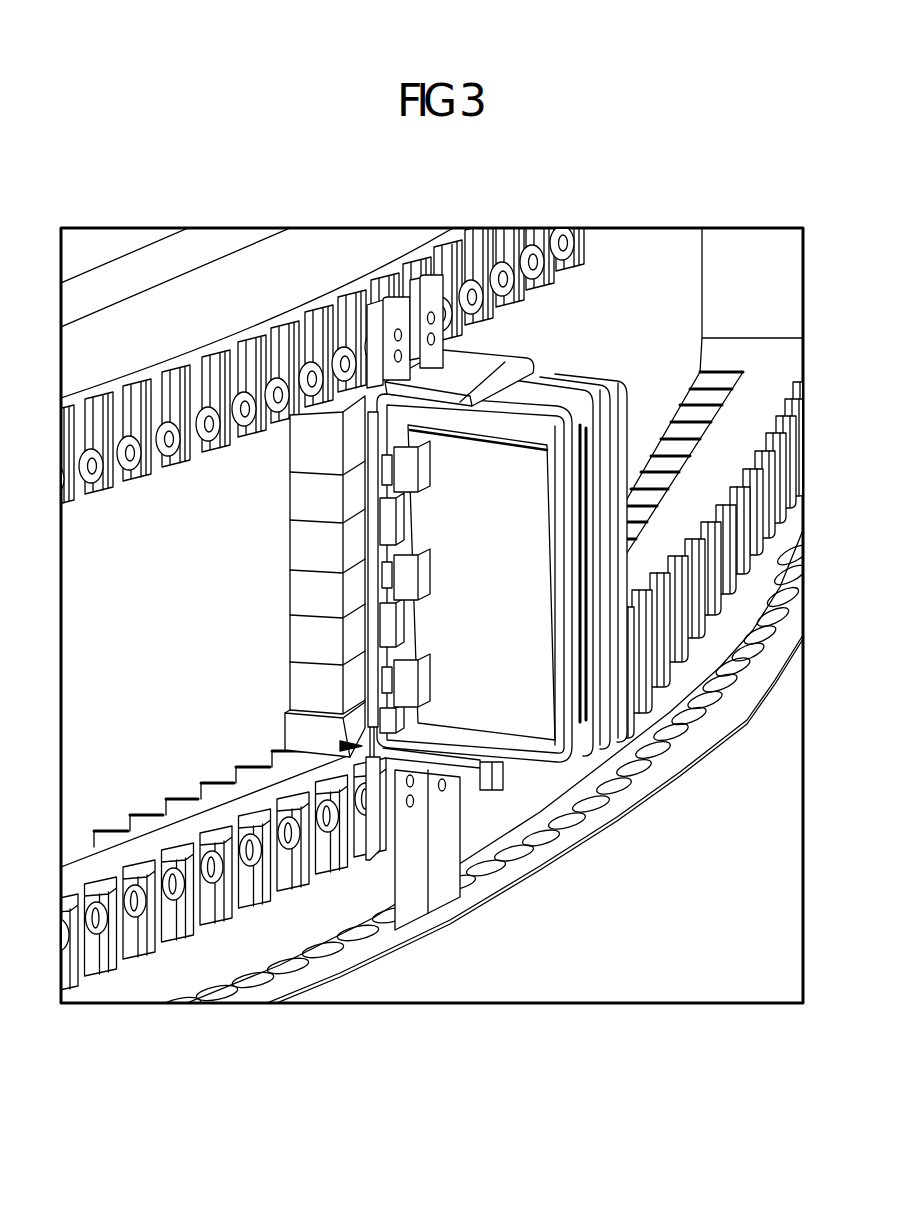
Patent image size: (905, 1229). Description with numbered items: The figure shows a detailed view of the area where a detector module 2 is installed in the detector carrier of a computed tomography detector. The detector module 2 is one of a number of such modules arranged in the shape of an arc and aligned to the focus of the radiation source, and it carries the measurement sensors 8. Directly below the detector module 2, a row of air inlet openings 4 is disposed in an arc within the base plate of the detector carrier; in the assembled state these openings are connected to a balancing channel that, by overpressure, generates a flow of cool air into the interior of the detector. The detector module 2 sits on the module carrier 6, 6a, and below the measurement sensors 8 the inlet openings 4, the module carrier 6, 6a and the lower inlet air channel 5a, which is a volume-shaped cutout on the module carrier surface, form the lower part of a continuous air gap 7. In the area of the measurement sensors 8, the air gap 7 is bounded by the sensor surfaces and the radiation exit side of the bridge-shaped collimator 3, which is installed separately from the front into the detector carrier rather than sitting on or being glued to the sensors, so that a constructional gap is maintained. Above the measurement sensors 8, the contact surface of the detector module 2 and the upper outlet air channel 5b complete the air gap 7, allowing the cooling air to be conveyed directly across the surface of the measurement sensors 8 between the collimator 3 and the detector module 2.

The detector module 2 is at (517, 707).
The collimator 3 is at (290, 633).
The air inlet openings 4 is at (323, 953).
The inlet air channel 5a is at (217, 913).
The outlet air channel 5b is at (160, 372).
The module carrier 6 is at (480, 388).
The module carrier 6a is at (413, 900).
The air gap 7 is at (342, 746).
The measurement sensors 8 is at (382, 472).